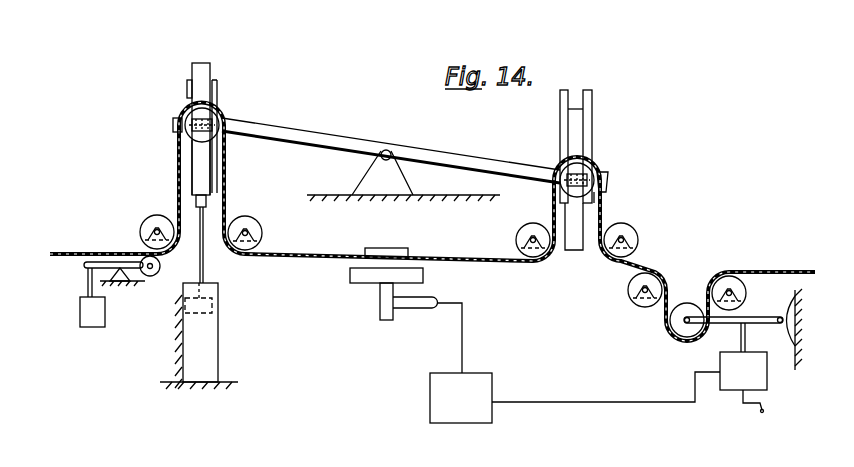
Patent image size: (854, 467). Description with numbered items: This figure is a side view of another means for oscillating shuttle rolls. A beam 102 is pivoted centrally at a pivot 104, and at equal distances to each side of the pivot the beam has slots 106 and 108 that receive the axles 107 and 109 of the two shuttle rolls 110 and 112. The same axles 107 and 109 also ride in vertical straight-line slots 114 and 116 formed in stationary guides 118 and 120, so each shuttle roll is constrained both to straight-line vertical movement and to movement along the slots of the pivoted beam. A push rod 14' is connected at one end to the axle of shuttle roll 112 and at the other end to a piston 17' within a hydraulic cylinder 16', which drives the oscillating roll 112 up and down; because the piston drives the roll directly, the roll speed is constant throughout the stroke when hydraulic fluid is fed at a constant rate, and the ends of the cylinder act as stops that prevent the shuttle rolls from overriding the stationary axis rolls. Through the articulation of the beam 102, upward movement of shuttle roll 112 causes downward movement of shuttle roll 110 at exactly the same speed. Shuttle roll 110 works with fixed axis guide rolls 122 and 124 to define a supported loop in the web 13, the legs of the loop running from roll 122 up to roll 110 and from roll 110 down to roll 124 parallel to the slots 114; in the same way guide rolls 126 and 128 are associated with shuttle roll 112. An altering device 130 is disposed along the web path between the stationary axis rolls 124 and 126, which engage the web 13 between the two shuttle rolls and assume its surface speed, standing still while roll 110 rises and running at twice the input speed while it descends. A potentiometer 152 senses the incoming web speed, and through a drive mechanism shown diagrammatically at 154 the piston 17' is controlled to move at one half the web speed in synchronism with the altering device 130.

The web 13 is at (338, 257).
The push rod 14' is at (223, 245).
The hydraulic cylinder 16' is at (214, 336).
The piston 17' is at (223, 302).
The beam 102 is at (307, 131).
The pivot 104 is at (392, 148).
The slot 106 is at (588, 160).
The axle 107 is at (601, 170).
The slot 108 is at (227, 112).
The axle 109 is at (173, 125).
The shuttle roll 110 is at (600, 195).
The shuttle roll 112 is at (200, 143).
The vertical straight-line slot 114 is at (586, 128).
The vertical straight-line slot 116 is at (187, 92).
The stationary guide 118 is at (592, 100).
The stationary guide 120 is at (188, 80).
The guide roll 122 is at (618, 261).
The guide roll 124 is at (528, 259).
The guide roll 126 is at (253, 220).
The guide roll 128 is at (145, 226).
The altering device 130 is at (363, 276).
The potentiometer 152 is at (733, 382).
The drive mechanism 154 is at (495, 378).